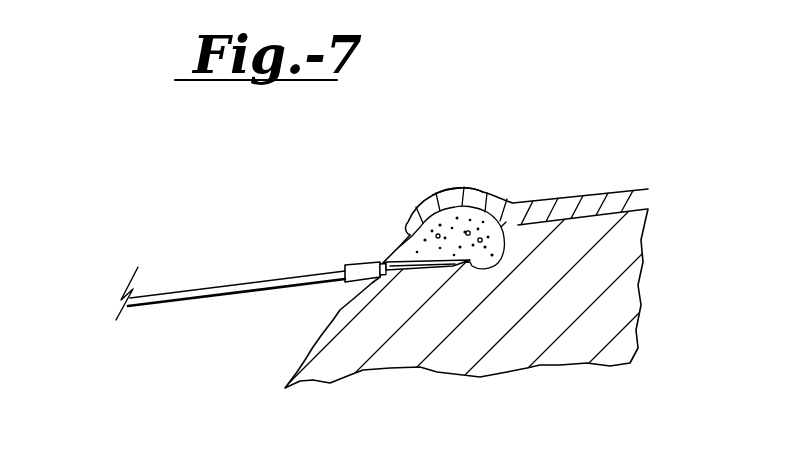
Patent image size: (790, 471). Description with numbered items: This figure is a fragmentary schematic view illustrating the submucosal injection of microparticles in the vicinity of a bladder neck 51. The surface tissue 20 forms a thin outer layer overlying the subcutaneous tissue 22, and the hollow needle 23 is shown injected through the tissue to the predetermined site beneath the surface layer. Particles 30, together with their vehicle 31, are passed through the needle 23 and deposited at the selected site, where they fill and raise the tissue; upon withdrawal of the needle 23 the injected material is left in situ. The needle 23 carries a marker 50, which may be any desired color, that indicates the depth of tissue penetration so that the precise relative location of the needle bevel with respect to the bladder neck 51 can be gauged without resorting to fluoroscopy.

The surface tissue 20 is at (542, 185).
The subcutaneous tissue 22 is at (457, 267).
The needle 23 is at (207, 287).
The particles 30 is at (506, 272).
The vehicle 31 is at (485, 247).
The marker 50 is at (356, 262).
The bladder neck 51 is at (430, 197).